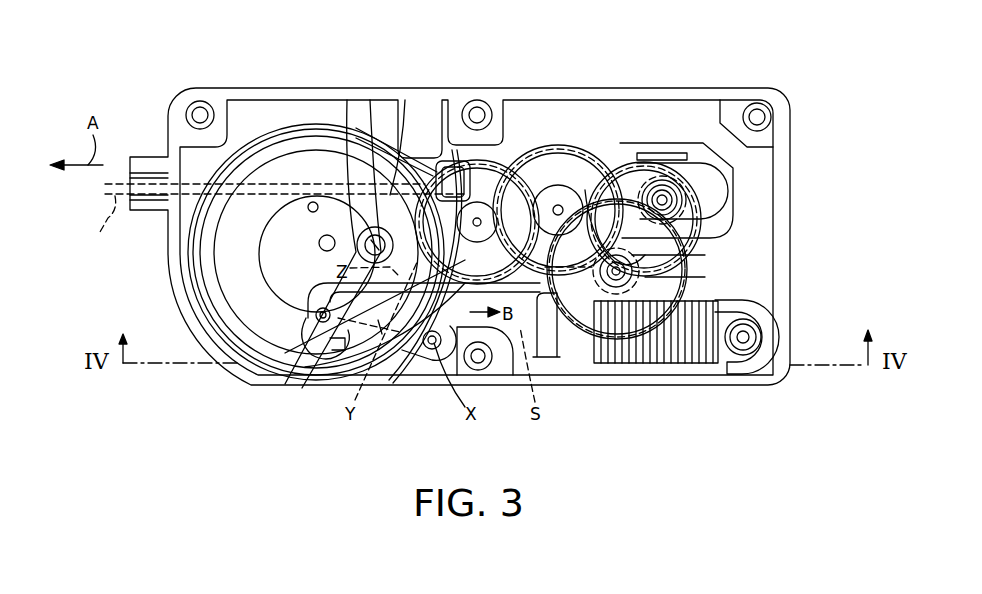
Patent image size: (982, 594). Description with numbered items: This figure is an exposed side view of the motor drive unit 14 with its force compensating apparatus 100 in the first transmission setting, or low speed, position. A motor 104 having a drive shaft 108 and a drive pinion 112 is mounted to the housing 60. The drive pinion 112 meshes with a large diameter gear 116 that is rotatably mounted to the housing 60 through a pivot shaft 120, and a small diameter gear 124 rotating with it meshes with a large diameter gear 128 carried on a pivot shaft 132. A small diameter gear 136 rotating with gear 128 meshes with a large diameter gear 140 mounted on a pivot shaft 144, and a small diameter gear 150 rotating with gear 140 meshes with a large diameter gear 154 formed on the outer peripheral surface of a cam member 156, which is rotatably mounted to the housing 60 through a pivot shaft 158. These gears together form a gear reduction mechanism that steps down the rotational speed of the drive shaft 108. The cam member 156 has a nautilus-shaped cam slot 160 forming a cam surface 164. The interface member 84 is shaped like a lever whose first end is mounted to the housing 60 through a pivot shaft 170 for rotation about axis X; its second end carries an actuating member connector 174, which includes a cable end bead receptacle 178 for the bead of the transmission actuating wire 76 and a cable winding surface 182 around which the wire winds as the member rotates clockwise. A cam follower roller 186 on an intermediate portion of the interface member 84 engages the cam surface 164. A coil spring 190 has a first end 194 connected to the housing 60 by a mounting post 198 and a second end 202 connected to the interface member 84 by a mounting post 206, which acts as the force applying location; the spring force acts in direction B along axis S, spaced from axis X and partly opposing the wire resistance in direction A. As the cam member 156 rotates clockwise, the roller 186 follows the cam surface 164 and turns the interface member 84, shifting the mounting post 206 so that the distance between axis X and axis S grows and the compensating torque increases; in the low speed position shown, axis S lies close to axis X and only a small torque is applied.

The motor drive unit 14 is at (818, 124).
The housing 60 is at (688, 88).
The transmission actuating wire 76 is at (278, 218).
The interface member 84 is at (420, 129).
The force compensating apparatus 100 is at (267, 120).
The motor 104 is at (632, 143).
The drive shaft 108 is at (670, 200).
The drive pinion 112 is at (687, 180).
The large diameter gear 116 is at (700, 242).
The pivot shaft 120 is at (632, 272).
The small diameter gear 124 is at (660, 307).
The large diameter gear 128 is at (597, 168).
The pivot shaft 132 is at (558, 205).
The small diameter gear 136 is at (556, 186).
The large diameter gear 140 is at (522, 135).
The pivot shaft 144 is at (518, 190).
The small diameter gear 150 is at (477, 100).
The large diameter gear 154 is at (302, 124).
The cam member 156 is at (206, 232).
The pivot shaft 158 is at (319, 241).
The cam slot 160 is at (242, 282).
The cam surface 164 is at (210, 340).
The pivot shaft 170 is at (430, 339).
The actuating member connector 174 is at (392, 150).
The cable end bead receptacle 178 is at (447, 160).
The cable winding surface 182 is at (352, 100).
The roller 186 is at (375, 228).
The coil spring 190 is at (627, 364).
The first end 194 is at (733, 365).
The mounting post 198 is at (760, 330).
The second end 202 is at (296, 360).
The mounting post 206 is at (324, 322).